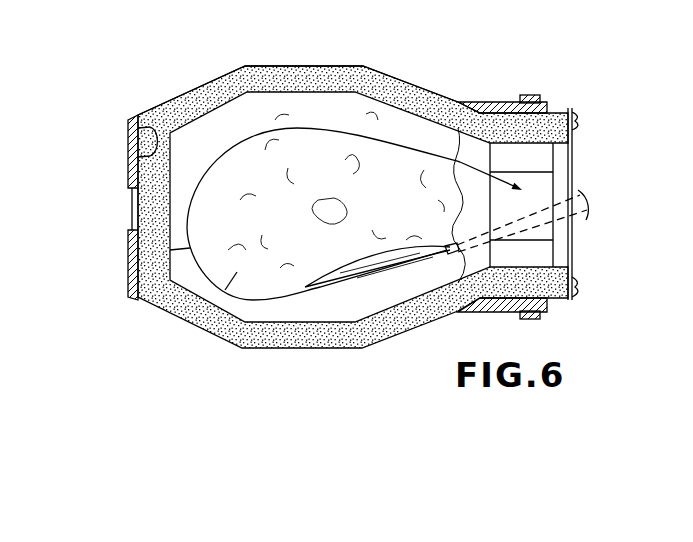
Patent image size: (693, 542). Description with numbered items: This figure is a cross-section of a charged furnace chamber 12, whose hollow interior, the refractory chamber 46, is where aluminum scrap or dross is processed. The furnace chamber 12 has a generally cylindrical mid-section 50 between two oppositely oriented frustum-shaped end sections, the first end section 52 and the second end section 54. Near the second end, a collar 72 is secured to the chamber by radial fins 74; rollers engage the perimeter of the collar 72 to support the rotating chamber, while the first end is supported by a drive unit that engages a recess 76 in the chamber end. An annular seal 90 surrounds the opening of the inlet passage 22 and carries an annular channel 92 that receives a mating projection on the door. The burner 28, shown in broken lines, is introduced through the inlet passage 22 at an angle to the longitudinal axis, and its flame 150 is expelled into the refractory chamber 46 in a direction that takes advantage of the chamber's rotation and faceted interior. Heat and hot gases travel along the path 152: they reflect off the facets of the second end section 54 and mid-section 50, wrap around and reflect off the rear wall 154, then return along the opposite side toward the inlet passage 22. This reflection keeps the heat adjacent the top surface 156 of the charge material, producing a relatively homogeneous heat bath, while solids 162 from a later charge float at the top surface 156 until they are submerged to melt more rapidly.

The furnace chamber 12 is at (222, 77).
The mid-section 50 is at (305, 66).
The first end section 52 is at (160, 106).
The second end section 54 is at (383, 74).
The radial fins 74 is at (480, 108).
The collar 72 is at (528, 97).
The annular seal 90 is at (577, 113).
The annular channel 92 is at (580, 127).
The burner 28 is at (582, 192).
The inlet passage 22 is at (523, 220).
The refractory chamber 46 is at (268, 236).
The solids 162 is at (325, 222).
The flame 150 is at (377, 272).
The recess 76 is at (132, 212).
The rear wall 154 is at (153, 140).
The path 152 is at (190, 248).
The top surface 156 is at (237, 272).